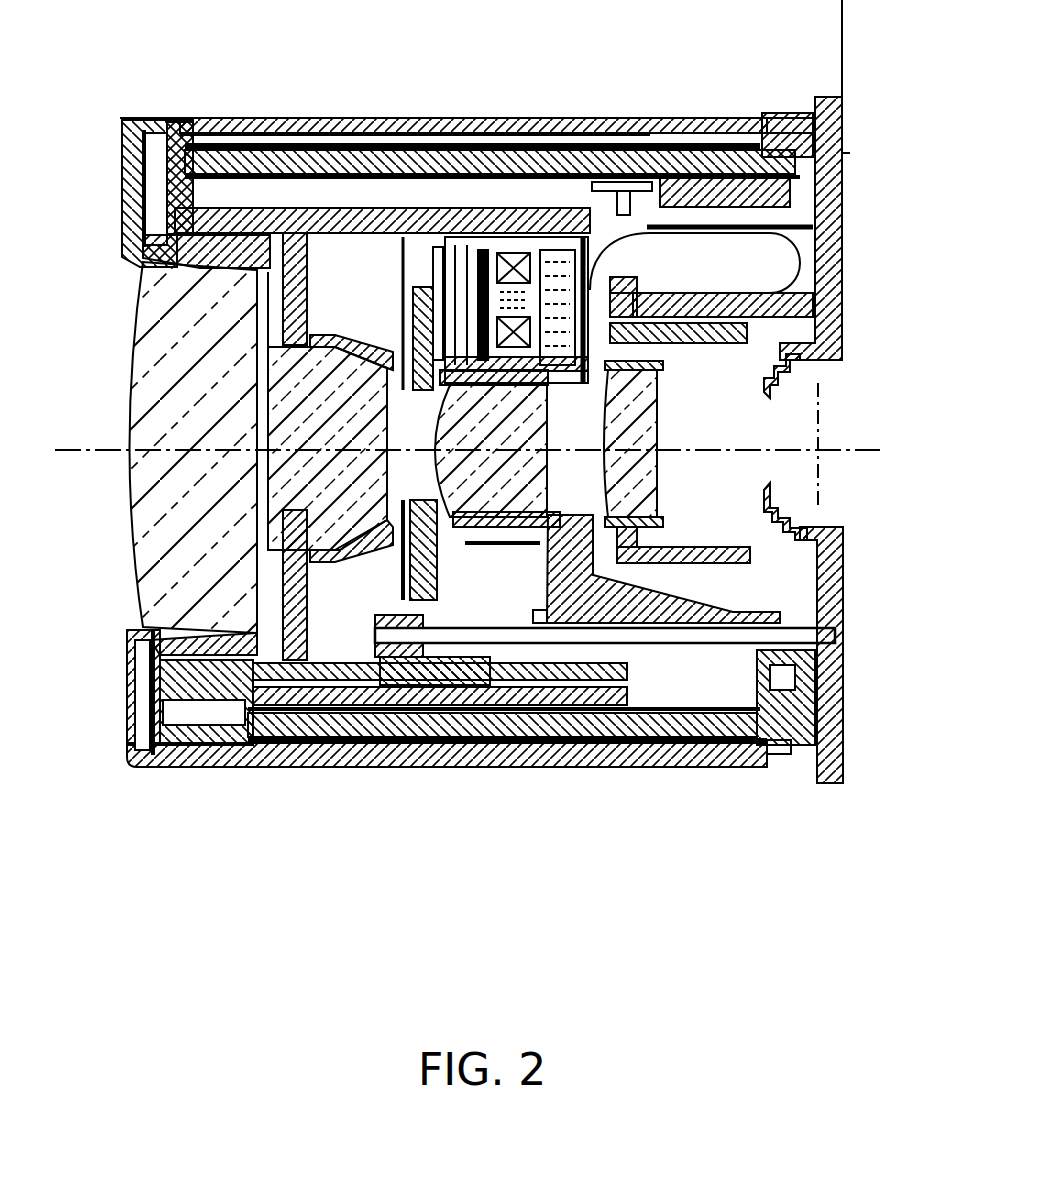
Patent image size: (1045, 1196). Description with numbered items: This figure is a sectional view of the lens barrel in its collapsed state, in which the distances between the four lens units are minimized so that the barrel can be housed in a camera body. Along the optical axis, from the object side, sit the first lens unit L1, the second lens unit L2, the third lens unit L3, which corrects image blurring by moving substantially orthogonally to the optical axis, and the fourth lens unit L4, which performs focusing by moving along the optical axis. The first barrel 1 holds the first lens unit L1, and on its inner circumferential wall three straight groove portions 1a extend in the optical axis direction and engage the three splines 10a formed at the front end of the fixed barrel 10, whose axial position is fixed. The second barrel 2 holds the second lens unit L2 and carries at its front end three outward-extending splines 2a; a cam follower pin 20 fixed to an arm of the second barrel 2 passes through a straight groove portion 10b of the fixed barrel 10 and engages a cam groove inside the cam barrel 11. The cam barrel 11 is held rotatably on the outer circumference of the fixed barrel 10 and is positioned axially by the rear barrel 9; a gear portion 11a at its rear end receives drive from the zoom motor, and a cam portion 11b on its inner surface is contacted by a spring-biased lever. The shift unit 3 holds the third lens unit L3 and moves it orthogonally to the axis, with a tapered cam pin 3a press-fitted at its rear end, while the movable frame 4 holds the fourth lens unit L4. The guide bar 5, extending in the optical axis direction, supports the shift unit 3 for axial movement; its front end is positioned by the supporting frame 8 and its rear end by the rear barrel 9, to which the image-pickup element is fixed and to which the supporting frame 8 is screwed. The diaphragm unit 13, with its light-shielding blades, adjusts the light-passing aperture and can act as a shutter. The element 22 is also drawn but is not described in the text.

The first barrel 1 is at (330, 113).
The straight groove portions 1a is at (357, 133).
The second barrel 2 is at (310, 337).
The splines 2a is at (181, 122).
The shift unit 3 is at (505, 228).
The cam pin 3a is at (747, 750).
The movable frame 4 is at (697, 552).
The guide bar 5 is at (725, 643).
The supporting frame 8 is at (373, 650).
The rear barrel 9 is at (847, 573).
The fixed barrel 10 is at (637, 666).
The splines 10a is at (225, 118).
The straight groove portions 10b is at (600, 115).
The cam barrel 11 is at (405, 165).
The gear portion 11a is at (778, 115).
The cam portion 11b is at (848, 657).
The diaphragm unit 13 is at (403, 582).
The cam follower pin 20 is at (650, 123).
The flexible board 22 is at (650, 240).
The first lens unit L1 is at (140, 497).
The second lens unit L2 is at (360, 373).
The third lens unit L3 is at (543, 412).
The fourth lens unit L4 is at (658, 411).